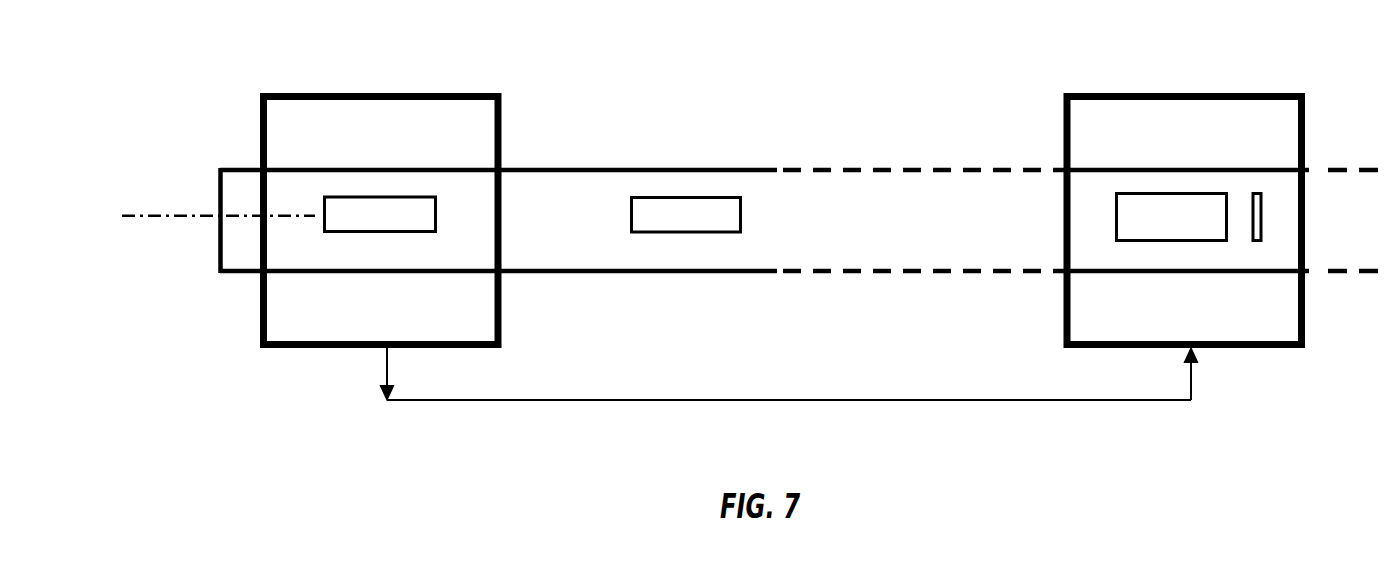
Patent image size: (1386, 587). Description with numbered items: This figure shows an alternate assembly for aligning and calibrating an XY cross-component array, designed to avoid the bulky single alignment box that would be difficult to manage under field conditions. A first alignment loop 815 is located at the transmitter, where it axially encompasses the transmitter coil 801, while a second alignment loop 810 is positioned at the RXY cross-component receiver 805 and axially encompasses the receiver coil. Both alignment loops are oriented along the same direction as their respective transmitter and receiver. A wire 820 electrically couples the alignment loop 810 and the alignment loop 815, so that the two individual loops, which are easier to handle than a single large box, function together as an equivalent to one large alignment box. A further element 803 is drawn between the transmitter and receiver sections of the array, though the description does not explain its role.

The transmitter coil 801 is at (347, 203).
The alignment loop 815 is at (455, 93).
The beam element BX 803 is at (725, 213).
The alignment loop 810 is at (1268, 93).
The RXY cross-component receiver 805 is at (1212, 230).
The wire 820 is at (975, 400).